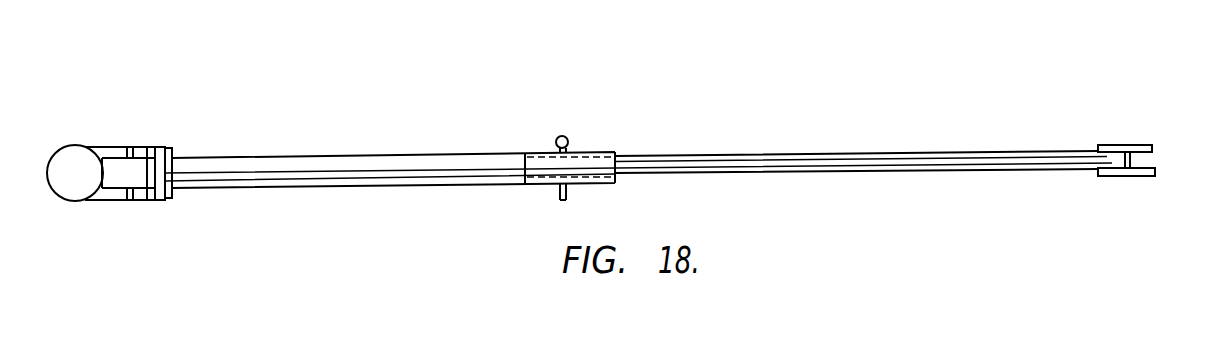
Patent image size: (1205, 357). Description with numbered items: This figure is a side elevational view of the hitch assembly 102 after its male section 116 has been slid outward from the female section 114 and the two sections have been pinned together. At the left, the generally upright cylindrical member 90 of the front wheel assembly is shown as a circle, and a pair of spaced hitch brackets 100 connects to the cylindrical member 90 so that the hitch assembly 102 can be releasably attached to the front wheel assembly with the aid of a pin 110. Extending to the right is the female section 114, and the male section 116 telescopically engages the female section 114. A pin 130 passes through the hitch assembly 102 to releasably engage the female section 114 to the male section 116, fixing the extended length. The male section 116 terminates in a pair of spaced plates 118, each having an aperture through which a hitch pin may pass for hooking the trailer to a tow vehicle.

The cylindrical member 90 is at (73, 160).
The hitch brackets 100 is at (135, 148).
The pin 110 is at (160, 202).
The female section 114 is at (310, 165).
The pin 130 is at (563, 133).
The male section 116 is at (783, 167).
The spaced plates 118 is at (1138, 143).
The hitch assembly 102 is at (638, 134).